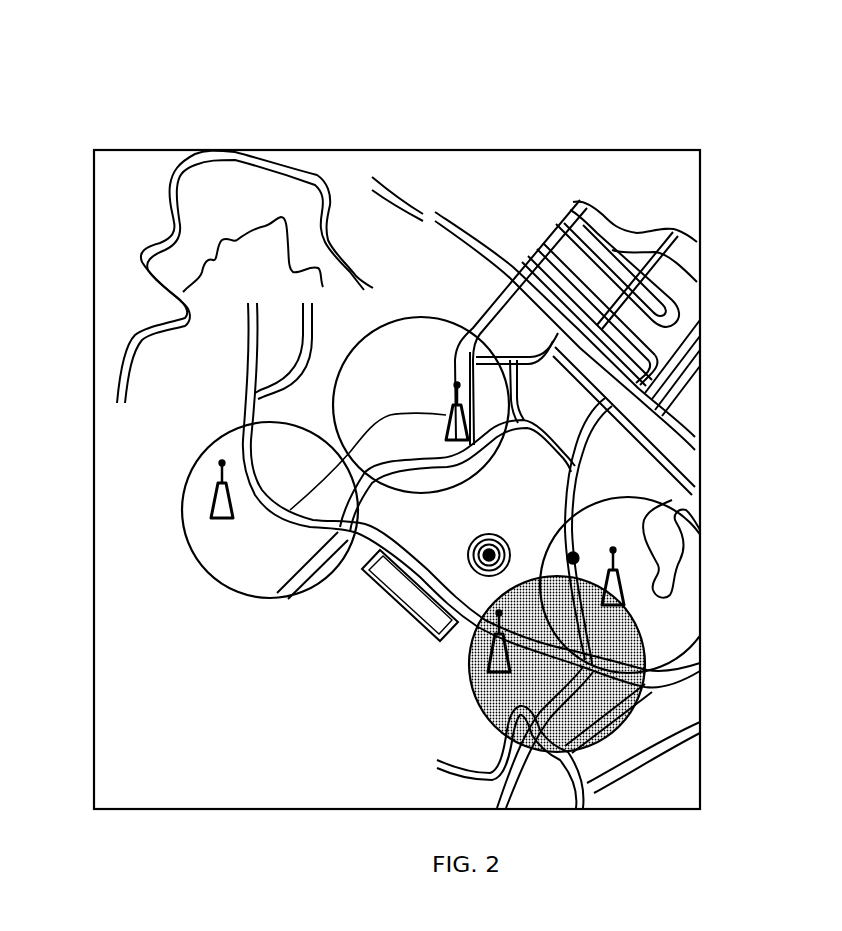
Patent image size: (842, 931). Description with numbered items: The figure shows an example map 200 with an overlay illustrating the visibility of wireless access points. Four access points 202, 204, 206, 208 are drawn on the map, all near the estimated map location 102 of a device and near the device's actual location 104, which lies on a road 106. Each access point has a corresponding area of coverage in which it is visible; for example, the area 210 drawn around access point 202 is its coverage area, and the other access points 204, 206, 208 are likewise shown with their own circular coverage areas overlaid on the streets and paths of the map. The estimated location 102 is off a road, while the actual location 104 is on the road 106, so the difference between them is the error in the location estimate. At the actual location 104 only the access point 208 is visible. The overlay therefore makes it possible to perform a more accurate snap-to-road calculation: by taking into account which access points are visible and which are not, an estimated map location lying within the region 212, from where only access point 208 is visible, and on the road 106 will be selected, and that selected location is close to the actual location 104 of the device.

The map environment 200 is at (46, 180).
The estimated location 102 is at (472, 553).
The actual location 104 is at (601, 530).
The road 106 is at (597, 441).
The access point 202 is at (207, 517).
The access point 204 is at (439, 438).
The access point 206 is at (488, 655).
The access point 208 is at (632, 575).
The area of coverage 210 is at (250, 562).
The region 212 is at (566, 553).